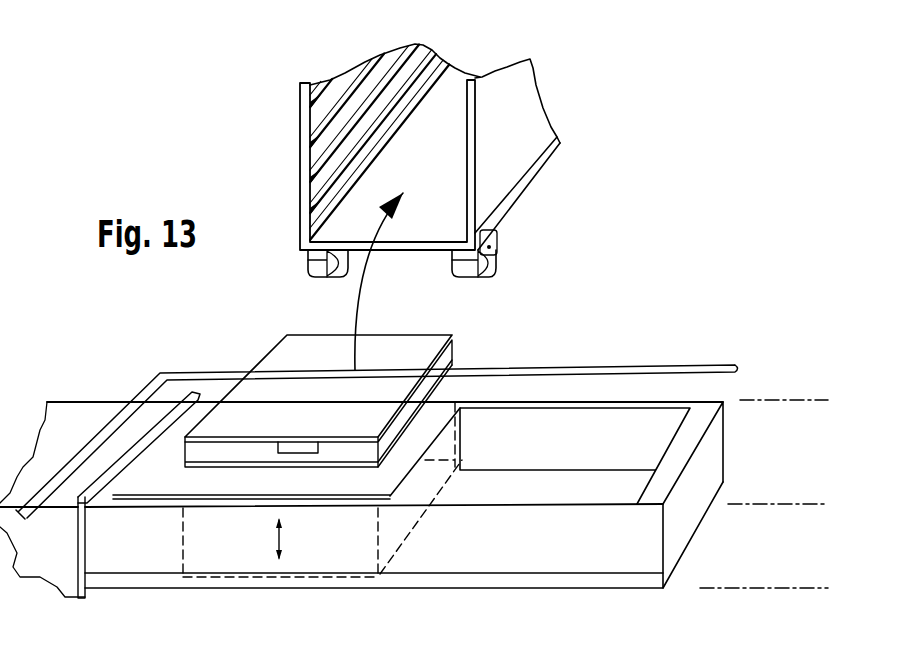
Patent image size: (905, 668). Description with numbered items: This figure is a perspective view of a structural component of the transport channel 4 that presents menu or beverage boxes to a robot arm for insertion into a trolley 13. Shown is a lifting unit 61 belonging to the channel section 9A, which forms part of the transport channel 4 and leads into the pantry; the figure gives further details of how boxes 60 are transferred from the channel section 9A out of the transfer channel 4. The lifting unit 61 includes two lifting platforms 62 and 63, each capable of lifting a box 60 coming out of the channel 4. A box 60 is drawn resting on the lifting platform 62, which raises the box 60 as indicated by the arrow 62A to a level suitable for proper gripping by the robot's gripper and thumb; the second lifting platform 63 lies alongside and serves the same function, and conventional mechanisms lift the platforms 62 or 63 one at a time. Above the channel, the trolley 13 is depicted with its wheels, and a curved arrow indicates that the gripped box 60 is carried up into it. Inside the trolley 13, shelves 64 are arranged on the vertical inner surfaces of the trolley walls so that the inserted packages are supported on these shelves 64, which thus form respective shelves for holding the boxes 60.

The trolley 13 is at (510, 165).
The shelves 64 is at (304, 193).
The channel section 9A is at (550, 348).
The lifting unit 61 is at (612, 420).
The transport channel 4 is at (777, 396).
The box 60 is at (294, 405).
The lifting platform 62 is at (240, 550).
The arrow 62A is at (281, 541).
The lifting platform 63 is at (580, 537).